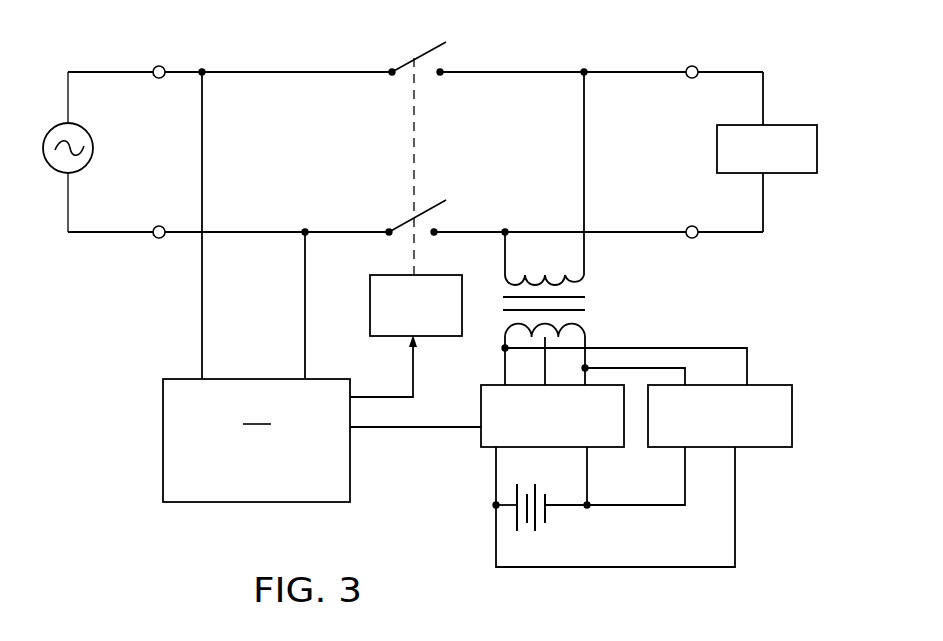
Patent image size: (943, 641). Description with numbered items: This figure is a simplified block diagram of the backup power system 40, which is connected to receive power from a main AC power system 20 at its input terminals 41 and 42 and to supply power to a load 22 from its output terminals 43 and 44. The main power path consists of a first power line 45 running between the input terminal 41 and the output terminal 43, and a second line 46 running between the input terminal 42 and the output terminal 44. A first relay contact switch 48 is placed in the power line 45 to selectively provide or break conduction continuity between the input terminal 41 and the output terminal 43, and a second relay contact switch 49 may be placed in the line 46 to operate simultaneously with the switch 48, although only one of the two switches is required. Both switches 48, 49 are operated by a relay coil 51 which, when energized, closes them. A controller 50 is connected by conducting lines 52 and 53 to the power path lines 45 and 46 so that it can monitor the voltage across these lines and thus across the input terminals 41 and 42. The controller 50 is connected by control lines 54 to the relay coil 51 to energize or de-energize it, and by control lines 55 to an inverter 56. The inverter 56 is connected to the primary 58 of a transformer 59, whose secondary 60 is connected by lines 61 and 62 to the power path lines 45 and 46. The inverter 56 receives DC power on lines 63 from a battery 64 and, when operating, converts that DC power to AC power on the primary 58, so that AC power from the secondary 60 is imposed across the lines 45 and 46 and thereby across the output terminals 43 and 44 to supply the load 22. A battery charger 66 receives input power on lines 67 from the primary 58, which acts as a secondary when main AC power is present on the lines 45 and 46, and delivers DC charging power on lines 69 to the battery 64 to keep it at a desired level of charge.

The main AC power system 20 is at (91, 135).
The load 22 is at (790, 125).
The backup power system 40 is at (480, 70).
The input terminal 41 is at (160, 65).
The input terminal 42 is at (157, 240).
The output terminal 43 is at (695, 66).
The output terminal 44 is at (692, 238).
The first power line 45 is at (280, 72).
The second line 46 is at (258, 232).
The first relay contact switch 48 is at (425, 51).
The second relay contact switch 49 is at (410, 220).
The controller 50 is at (163, 430).
The relay coil 51 is at (378, 276).
The conducting line 52 is at (203, 278).
The conducting line 53 is at (305, 325).
The control lines 54 is at (383, 397).
The control lines 55 is at (402, 428).
The inverter 56 is at (481, 398).
The primary 58 is at (587, 333).
The transformer 59 is at (598, 299).
The secondary 60 is at (590, 307).
The line 61 is at (584, 153).
The line 62 is at (508, 263).
The lines 63 is at (588, 464).
The battery 64 is at (548, 518).
The battery charger 66 is at (772, 383).
The lines 67 is at (667, 368).
The lines 69 is at (730, 522).